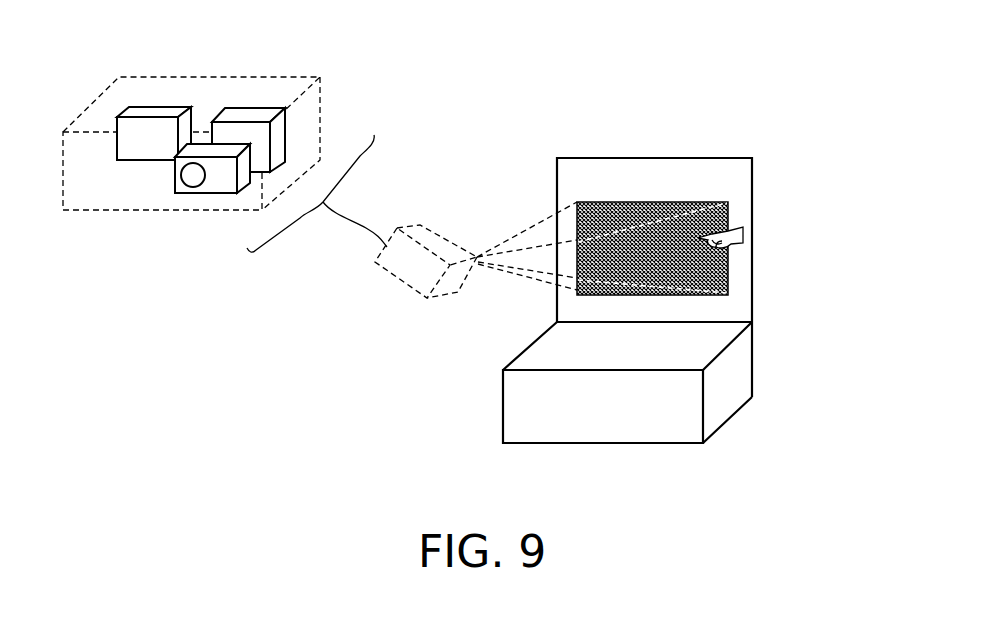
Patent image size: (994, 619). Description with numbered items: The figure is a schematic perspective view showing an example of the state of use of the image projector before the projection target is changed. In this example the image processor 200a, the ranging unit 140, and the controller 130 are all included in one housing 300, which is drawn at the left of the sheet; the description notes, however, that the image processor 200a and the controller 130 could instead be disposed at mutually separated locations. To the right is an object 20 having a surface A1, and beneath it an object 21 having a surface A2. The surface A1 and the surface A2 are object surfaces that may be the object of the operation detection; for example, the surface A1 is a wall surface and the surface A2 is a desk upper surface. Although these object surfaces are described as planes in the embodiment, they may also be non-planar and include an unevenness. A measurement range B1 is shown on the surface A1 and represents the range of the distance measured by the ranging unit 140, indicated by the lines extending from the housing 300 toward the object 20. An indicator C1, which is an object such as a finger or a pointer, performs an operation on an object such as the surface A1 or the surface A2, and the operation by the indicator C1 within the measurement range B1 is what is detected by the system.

The controller 130 is at (155, 107).
The image processor 200a is at (255, 108).
The ranging unit 140 is at (204, 194).
The housing 300 is at (413, 227).
The object 20 is at (753, 155).
The object 21 is at (758, 383).
The surface A1 is at (678, 172).
The surface A2 is at (535, 358).
The measurement range B1 is at (728, 273).
The indicator C1 is at (740, 235).